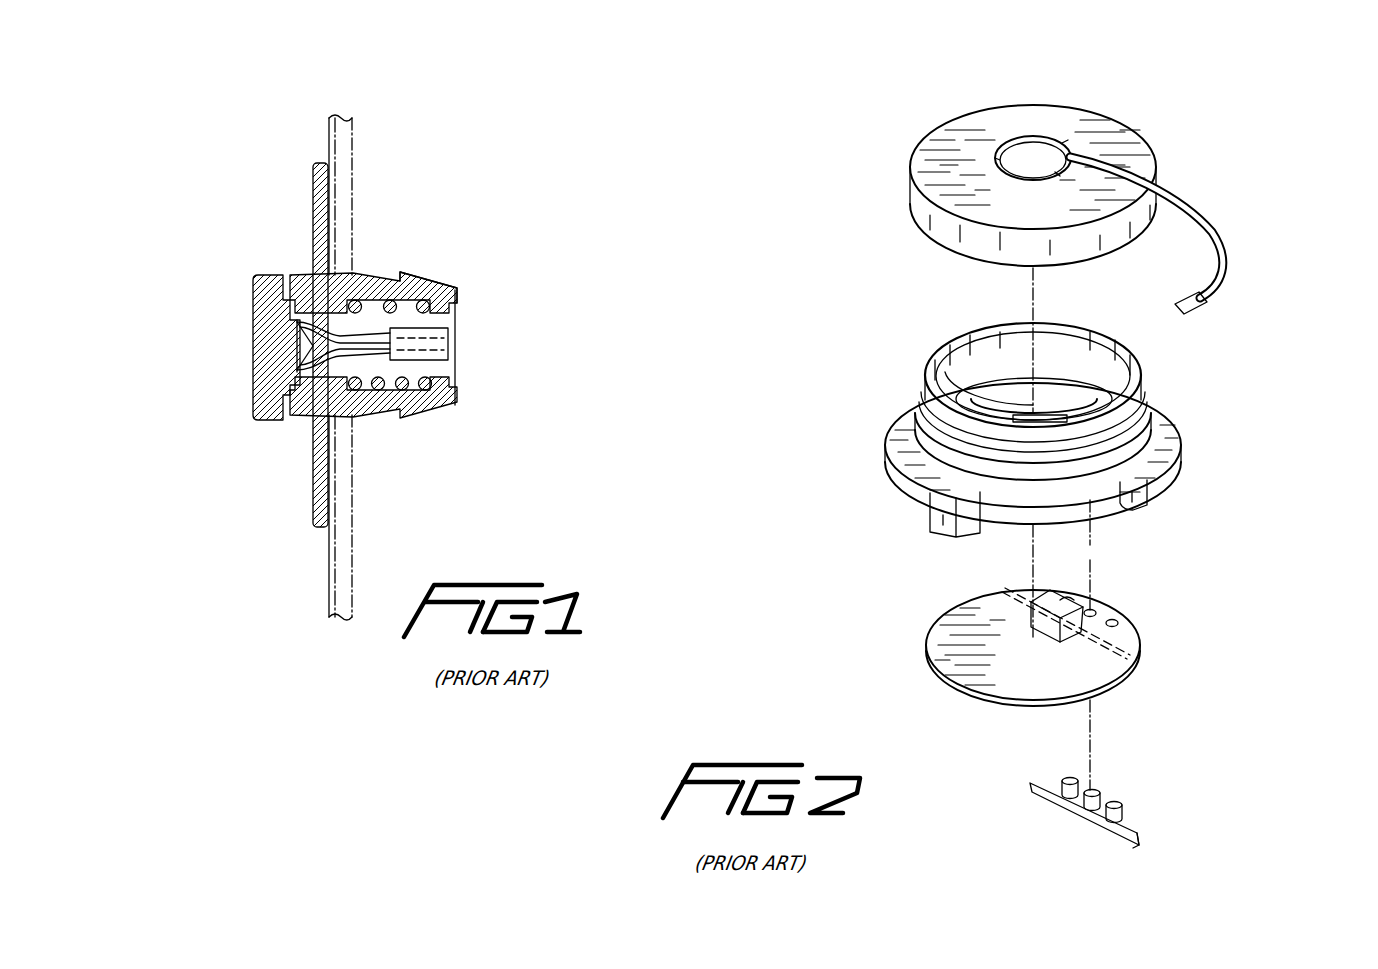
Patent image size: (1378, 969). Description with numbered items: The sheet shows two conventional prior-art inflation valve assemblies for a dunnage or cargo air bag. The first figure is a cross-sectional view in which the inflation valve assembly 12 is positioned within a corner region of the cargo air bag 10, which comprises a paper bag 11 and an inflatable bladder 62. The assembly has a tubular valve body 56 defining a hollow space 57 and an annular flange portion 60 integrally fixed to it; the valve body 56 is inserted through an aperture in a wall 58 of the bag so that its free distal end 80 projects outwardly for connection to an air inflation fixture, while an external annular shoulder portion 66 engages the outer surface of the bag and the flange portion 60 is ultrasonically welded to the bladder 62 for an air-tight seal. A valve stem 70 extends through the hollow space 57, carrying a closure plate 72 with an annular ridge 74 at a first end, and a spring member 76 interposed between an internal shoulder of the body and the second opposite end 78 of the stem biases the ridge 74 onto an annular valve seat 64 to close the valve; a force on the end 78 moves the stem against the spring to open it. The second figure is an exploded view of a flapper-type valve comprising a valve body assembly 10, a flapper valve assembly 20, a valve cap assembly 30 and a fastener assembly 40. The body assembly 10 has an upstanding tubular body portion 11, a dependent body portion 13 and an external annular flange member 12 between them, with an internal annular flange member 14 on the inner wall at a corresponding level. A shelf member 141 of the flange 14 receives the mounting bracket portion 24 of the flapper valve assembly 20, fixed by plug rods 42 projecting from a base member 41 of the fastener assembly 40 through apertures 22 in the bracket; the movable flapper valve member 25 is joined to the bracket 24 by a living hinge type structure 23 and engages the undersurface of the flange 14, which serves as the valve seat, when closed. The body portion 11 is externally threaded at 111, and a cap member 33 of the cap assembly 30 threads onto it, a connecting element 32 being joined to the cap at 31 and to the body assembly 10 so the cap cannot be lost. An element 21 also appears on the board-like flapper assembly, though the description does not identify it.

In FIG. 1, the cargo air bag / valve body assembly 10 is at (344, 104).
In FIG. 2, the cargo air bag / valve body assembly 10 is at (1224, 469).
In FIG. 1, the paper bag / upstanding tubular body portion 11 is at (353, 128).
In FIG. 2, the paper bag / upstanding tubular body portion 11 is at (985, 327).
In FIG. 1, the inflation valve assembly / external annular flange member 12 is at (496, 250).
In FIG. 2, the inflation valve assembly / external annular flange member 12 is at (1173, 413).
In FIG. 2, the dependent body portion 13 is at (1077, 513).
In FIG. 2, the internal annular flange member 14 is at (930, 365).
In FIG. 2, the flapper valve assembly 20 is at (1200, 680).
In FIG. 2, the connector block 21 is at (1047, 600).
In FIG. 2, the apertures 22 is at (1117, 621).
In FIG. 2, the living hinge type structure 23 is at (1115, 667).
In FIG. 2, the mounting bracket portion 24 is at (1130, 640).
In FIG. 2, the movable flapper valve member 25 is at (1000, 668).
In FIG. 2, the valve cap assembly 30 is at (1197, 125).
In FIG. 2, the connection of connecting element to cap member 31 is at (1042, 152).
In FIG. 2, the connecting element 32 is at (1227, 273).
In FIG. 2, the cap member 33 is at (940, 170).
In FIG. 2, the fastener assembly 40 is at (1192, 840).
In FIG. 2, the base member 41 is at (1090, 822).
In FIG. 2, the plug rods 42 is at (1125, 812).
In FIG. 1, the tubular valve body 56 is at (368, 280).
In FIG. 1, the hollow space 57 is at (402, 308).
In FIG. 1, the wall 58 is at (331, 618).
In FIG. 1, the annular flange portion 60 is at (318, 530).
In FIG. 1, the inflatable bladder 62 is at (330, 565).
In FIG. 1, the annular valve seat 64 is at (306, 298).
In FIG. 1, the external annular shoulder portion 66 is at (377, 413).
In FIG. 1, the valve stem 70 is at (297, 330).
In FIG. 1, the closure plate 72 is at (252, 388).
In FIG. 1, the annular ridge 74 is at (285, 398).
In FIG. 1, the spring member 76 is at (423, 390).
In FIG. 1, the second opposite end of valve stem 78 is at (450, 322).
In FIG. 1, the free distal end 80 is at (457, 291).
In FIG. 2, the externally threaded portion 111 is at (937, 427).
In FIG. 2, the shelf member 141 is at (1090, 393).